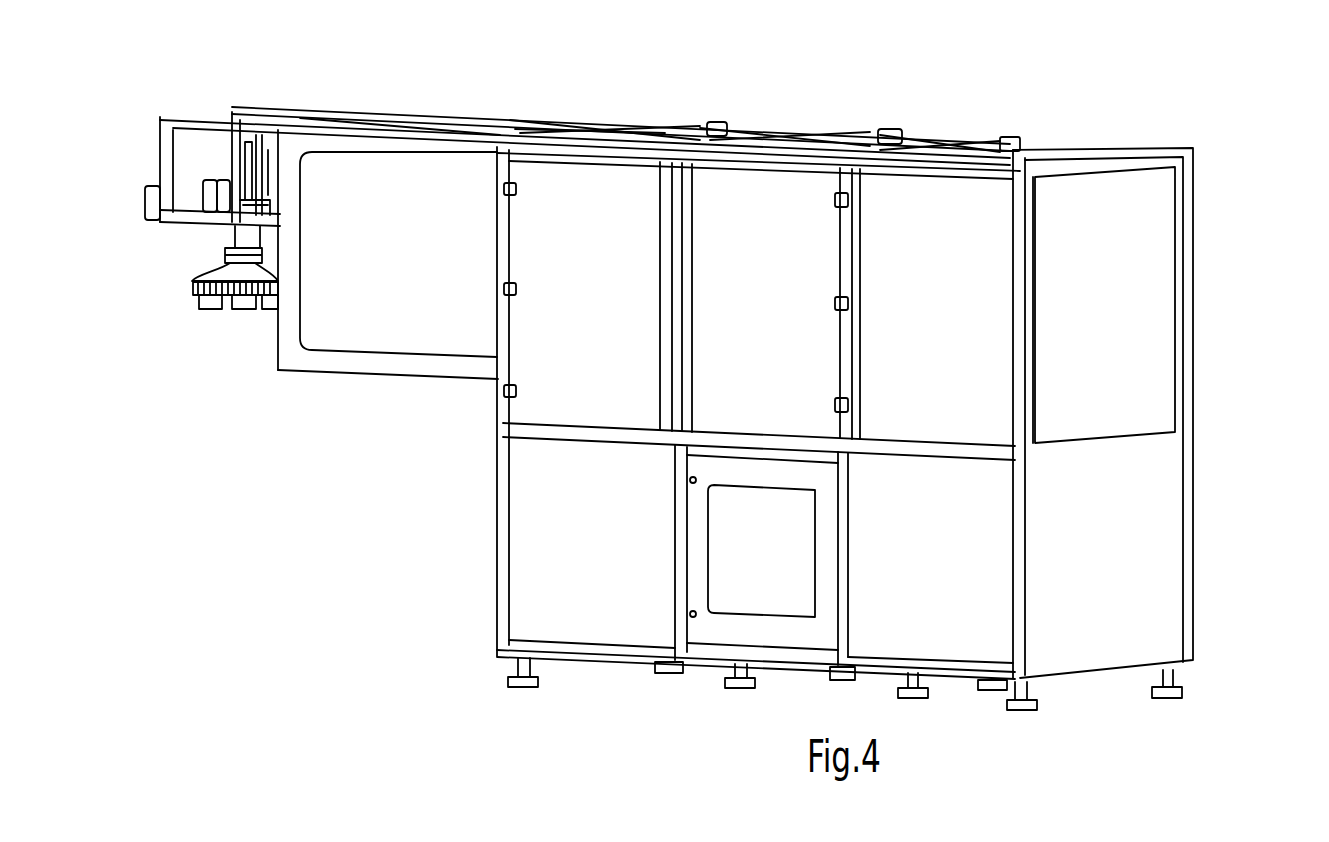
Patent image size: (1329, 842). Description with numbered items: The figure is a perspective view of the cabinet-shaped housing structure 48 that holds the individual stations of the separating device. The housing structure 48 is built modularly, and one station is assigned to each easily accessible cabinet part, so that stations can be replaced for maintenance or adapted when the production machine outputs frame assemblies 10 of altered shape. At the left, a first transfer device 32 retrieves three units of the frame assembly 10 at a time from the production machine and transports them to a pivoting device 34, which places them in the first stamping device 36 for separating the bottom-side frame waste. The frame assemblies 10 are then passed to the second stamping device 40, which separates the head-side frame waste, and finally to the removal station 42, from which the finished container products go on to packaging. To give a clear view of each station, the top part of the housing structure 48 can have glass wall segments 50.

The frame assembly 10 is at (270, 310).
The first transfer device 32 is at (248, 156).
The pivoting device 34 is at (562, 349).
The first stamping device 36 is at (562, 257).
The second stamping device 40 is at (749, 263).
The removal station 42 is at (902, 268).
The housing structure 48 is at (1140, 280).
The glass wall segments 50 is at (583, 197).